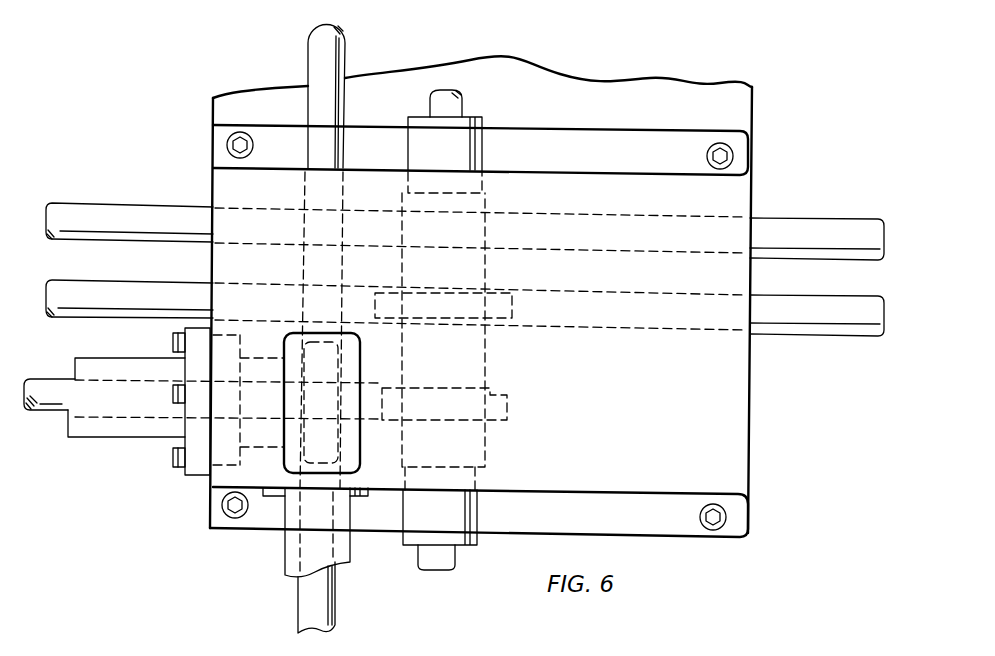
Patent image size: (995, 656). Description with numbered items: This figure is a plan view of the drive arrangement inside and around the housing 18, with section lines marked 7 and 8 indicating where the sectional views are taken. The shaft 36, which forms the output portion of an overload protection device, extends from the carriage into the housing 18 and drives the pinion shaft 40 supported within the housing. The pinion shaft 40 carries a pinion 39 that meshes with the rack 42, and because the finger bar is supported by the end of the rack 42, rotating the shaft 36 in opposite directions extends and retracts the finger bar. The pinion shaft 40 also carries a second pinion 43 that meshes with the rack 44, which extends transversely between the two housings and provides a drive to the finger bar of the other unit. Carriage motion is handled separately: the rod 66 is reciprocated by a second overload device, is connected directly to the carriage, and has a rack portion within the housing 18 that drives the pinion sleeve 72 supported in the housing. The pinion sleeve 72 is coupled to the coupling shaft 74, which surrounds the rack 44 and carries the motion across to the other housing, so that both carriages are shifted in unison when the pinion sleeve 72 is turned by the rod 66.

The housing 18 is at (723, 427).
The shaft 36 is at (455, 108).
The pinion 39 is at (492, 295).
The pinion shaft 40 is at (465, 445).
The rack 42 is at (92, 287).
The second pinion 43 is at (507, 398).
The rack 44 is at (48, 412).
The rod 66 is at (335, 47).
The pinion sleeve 72 is at (275, 365).
The coupling shaft 74 is at (137, 430).
The section line 7- 7 is at (437, 593).
The section line 8- 8 is at (328, 63).